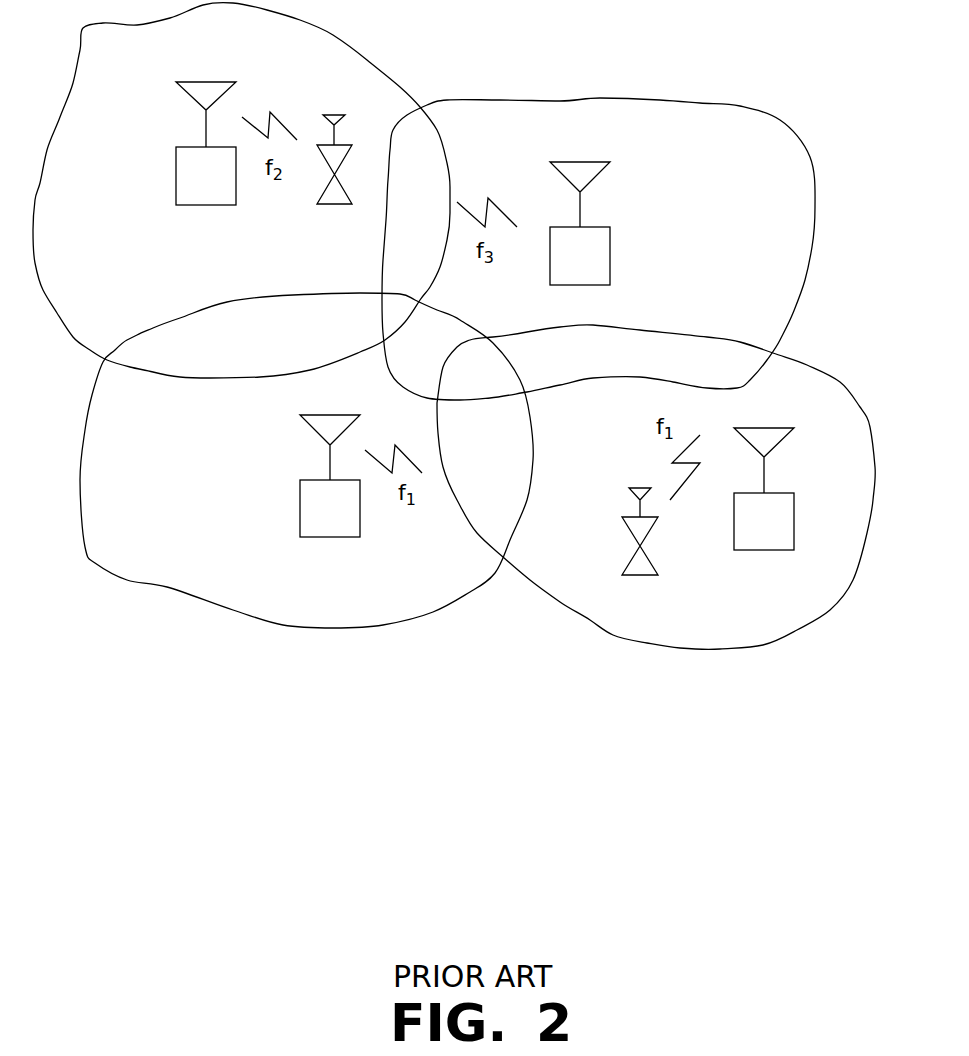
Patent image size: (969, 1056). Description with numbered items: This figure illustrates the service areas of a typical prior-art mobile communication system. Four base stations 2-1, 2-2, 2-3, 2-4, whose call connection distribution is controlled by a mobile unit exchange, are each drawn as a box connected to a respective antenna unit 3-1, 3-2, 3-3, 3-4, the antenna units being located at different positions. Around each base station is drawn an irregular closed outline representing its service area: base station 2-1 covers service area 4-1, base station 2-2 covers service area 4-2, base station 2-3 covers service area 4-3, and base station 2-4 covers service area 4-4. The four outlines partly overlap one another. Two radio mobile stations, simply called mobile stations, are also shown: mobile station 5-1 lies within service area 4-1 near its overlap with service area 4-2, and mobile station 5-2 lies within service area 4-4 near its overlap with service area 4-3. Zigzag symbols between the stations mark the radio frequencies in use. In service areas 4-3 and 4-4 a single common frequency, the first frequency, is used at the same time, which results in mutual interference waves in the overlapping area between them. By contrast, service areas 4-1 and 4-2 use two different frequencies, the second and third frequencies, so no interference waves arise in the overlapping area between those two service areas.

The base station 2-1 is at (175, 182).
The base station 2-2 is at (610, 252).
The base station 2-3 is at (330, 537).
The base station 2-4 is at (763, 550).
The antenna unit 3-1 is at (195, 82).
The antenna unit 3-2 is at (607, 165).
The antenna unit 3-3 is at (315, 437).
The antenna unit 3-4 is at (785, 427).
The service area 4-1 is at (340, 38).
The service area 4-2 is at (700, 105).
The service area 4-3 is at (287, 628).
The service area 4-4 is at (663, 648).
The radio mobile station 5-1 is at (347, 157).
The radio mobile station 5-2 is at (628, 530).